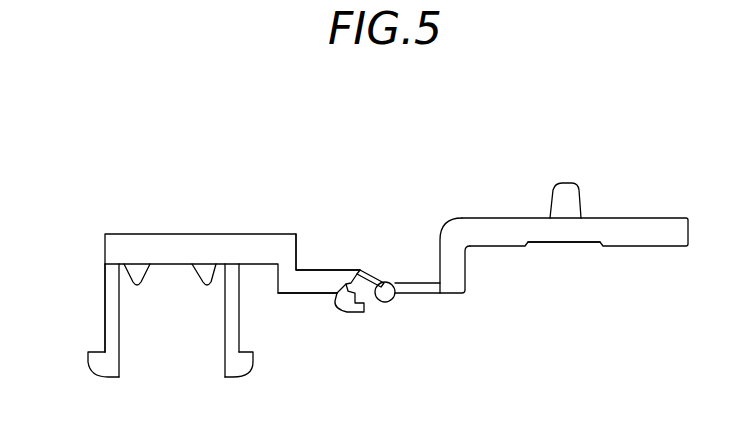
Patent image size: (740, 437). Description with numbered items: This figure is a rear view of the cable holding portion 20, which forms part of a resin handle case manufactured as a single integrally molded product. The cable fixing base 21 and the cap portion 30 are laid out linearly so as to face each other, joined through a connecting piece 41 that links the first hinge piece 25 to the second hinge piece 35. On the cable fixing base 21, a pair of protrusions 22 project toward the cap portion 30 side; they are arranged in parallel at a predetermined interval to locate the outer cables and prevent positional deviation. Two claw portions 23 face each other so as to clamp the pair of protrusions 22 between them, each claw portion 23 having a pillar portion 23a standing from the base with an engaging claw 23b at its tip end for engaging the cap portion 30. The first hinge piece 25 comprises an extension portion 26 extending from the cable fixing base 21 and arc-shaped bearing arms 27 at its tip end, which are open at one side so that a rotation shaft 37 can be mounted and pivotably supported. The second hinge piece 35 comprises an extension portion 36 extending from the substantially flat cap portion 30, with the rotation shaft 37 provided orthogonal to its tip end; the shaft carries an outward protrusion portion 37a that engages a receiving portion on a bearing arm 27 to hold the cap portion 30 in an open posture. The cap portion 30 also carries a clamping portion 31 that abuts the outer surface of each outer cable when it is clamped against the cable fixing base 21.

The cable holding portion 20 is at (360, 199).
The cable fixing base 21 is at (193, 242).
The protrusions 22 is at (148, 283).
The claw portion 23 is at (174, 347).
The pillar portion 23a is at (104, 299).
The engaging claw 23b is at (92, 372).
The first hinge piece 25 is at (342, 248).
The extension portion 26 is at (310, 266).
The bearing arms 27 is at (352, 281).
The cap portion 30 is at (622, 218).
The clamping portion 31 is at (568, 243).
The second hinge piece 35 is at (396, 313).
The extension portion 36 is at (425, 294).
The rotation shaft 37 is at (383, 303).
The protrusion portion 37a is at (388, 279).
The connecting piece 41 is at (370, 268).